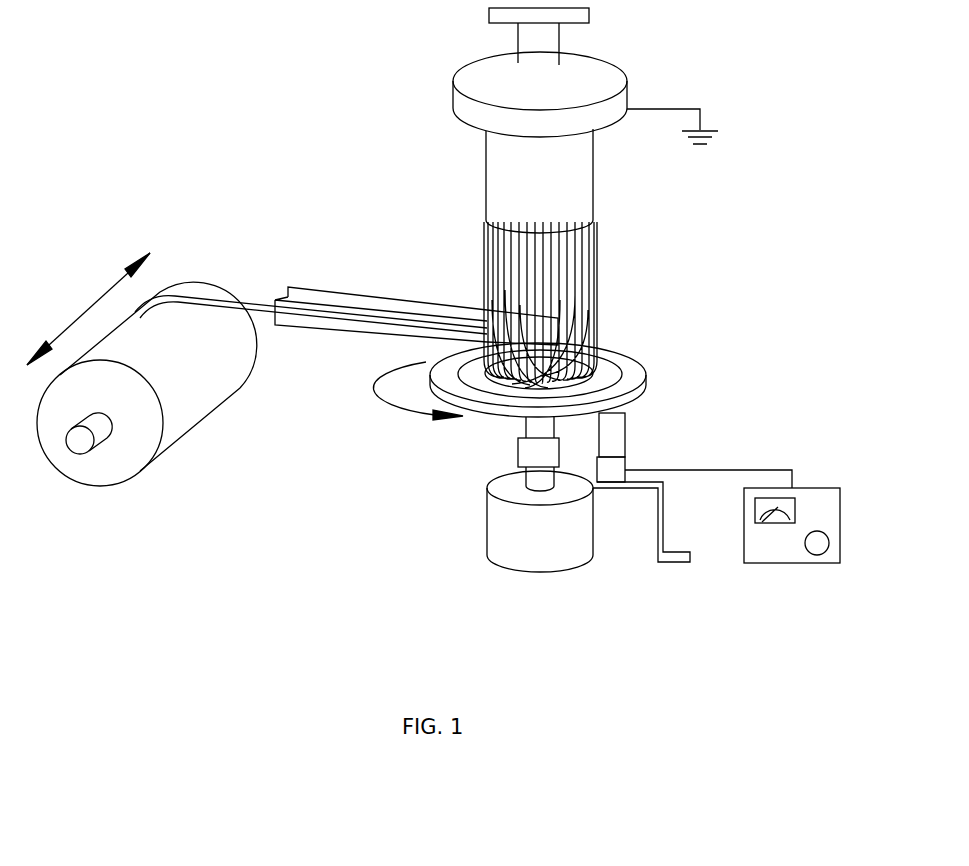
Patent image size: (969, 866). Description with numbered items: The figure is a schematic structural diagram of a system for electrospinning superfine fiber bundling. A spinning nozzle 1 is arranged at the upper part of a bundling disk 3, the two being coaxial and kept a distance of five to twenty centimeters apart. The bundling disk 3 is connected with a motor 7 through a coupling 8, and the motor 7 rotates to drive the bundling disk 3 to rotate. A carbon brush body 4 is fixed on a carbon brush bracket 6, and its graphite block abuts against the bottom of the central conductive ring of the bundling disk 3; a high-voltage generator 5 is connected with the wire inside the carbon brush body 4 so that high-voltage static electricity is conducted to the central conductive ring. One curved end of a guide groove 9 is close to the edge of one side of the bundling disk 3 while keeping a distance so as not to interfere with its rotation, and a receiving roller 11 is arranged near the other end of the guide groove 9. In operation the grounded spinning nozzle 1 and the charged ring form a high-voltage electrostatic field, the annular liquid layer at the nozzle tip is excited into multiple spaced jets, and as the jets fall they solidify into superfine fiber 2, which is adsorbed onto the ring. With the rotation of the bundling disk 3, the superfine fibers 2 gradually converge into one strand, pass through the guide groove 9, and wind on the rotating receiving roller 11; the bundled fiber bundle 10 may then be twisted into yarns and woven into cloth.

The spinning nozzle 1 is at (553, 89).
The superfine fiber 2 is at (628, 220).
The bundling disk 3 is at (623, 370).
The carbon brush body 4 is at (617, 412).
The high-voltage generator 5 is at (818, 510).
The carbon brush bracket 6 is at (663, 556).
The motor 7 is at (497, 537).
The coupling 8 is at (527, 452).
The guide groove 9 is at (372, 330).
The fiber bundle 10 is at (263, 308).
The receiving roller 11 is at (187, 395).